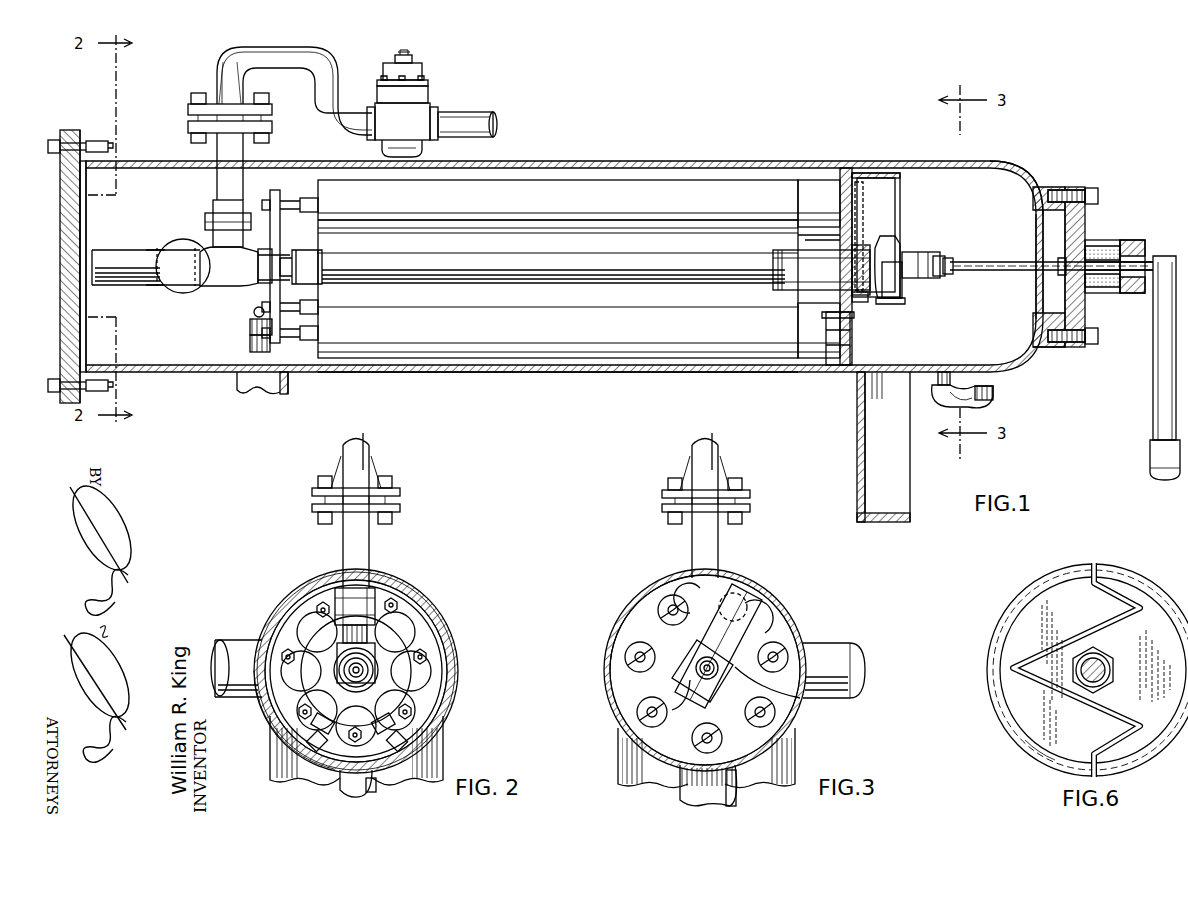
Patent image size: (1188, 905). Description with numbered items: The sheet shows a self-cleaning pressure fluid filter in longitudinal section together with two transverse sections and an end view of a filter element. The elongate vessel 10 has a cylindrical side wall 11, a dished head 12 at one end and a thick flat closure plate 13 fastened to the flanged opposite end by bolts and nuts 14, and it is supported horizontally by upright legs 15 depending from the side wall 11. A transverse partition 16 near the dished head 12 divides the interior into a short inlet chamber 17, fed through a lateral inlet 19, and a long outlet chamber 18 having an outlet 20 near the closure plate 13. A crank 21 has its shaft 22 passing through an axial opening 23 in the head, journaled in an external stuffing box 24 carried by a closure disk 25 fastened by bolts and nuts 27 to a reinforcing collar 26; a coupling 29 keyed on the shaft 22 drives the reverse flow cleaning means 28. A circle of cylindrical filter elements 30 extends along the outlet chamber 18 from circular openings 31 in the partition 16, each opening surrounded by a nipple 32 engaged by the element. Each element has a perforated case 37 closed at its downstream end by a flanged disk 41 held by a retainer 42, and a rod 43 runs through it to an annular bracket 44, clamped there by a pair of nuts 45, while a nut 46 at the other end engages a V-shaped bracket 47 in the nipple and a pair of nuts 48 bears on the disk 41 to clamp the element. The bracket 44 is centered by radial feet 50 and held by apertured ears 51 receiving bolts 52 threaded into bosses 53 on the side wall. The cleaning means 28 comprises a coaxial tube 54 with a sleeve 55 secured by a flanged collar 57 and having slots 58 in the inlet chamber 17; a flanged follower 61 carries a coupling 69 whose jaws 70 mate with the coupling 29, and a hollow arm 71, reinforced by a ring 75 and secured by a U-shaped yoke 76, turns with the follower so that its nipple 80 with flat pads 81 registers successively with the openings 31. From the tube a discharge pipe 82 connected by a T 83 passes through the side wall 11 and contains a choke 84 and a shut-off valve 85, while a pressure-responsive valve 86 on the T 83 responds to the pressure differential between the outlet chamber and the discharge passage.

In FIG. 1, the elongate vessel 10 is at (642, 161).
In FIG. 2, the elongate vessel 10 is at (303, 584).
In FIG. 3, the elongate vessel 10 is at (640, 592).
In FIG. 1, the cylindrical side wall 11 is at (604, 372).
In FIG. 2, the cylindrical side wall 11 is at (458, 652).
In FIG. 3, the cylindrical side wall 11 is at (800, 712).
In FIG. 1, the dished end wall or head 12 is at (1000, 168).
In FIG. 1, the flat closure plate or head 13 is at (73, 332).
In FIG. 1, the bolts and nuts 14 is at (108, 138).
In FIG. 1, the upright legs 15 is at (857, 428).
In FIG. 2, the upright legs 15 is at (270, 766).
In FIG. 3, the upright legs 15 is at (618, 760).
In FIG. 1, the upright wall or partition 16 is at (848, 358).
In FIG. 2, the upright wall or partition 16 is at (440, 688).
In FIG. 3, the upright wall or partition 16 is at (614, 684).
In FIG. 1, the inlet chamber 17 is at (964, 338).
In FIG. 1, the outlet chamber 18 is at (158, 353).
In FIG. 1, the lateral inlet 19 is at (994, 392).
In FIG. 2, the lateral inlet 19 is at (340, 790).
In FIG. 3, the lateral inlet 19 is at (736, 800).
In FIG. 1, the outlet 20 is at (182, 242).
In FIG. 2, the outlet 20 is at (222, 640).
In FIG. 3, the outlet 20 is at (862, 646).
In FIG. 1, the crank 21 is at (1154, 414).
In FIG. 1, the shaft 22 is at (1020, 262).
In FIG. 3, the shaft 22 is at (708, 700).
In FIG. 1, the axial opening 23 is at (1034, 300).
In FIG. 1, the external stuffing box 24 is at (1108, 240).
In FIG. 1, the flat closure disk or plate 25 is at (1086, 302).
In FIG. 1, the reinforcing collar or ring 26 is at (1050, 348).
In FIG. 1, the bolts and nuts 27 is at (1095, 190).
In FIG. 1, the reverse flow cleaning means 28 is at (937, 202).
In FIG. 1, the coupling 29 is at (951, 259).
In FIG. 3, the coupling 29 is at (694, 674).
In FIG. 1, the cylindrical filter elements 30 is at (495, 345).
In FIG. 6, the cylindrical filter elements 30 is at (1022, 586).
In FIG. 1, the circular openings 31 is at (851, 343).
In FIG. 1, the nipple 32 is at (820, 180).
In FIG. 6, the perforated metallic case or shell 37 is at (1004, 728).
In FIG. 6, the flanged metallic disk or closure plate 41 is at (1062, 756).
In FIG. 6, the retainer 42 is at (1084, 634).
In FIG. 1, the elongate rod 43 is at (286, 340).
In FIG. 2, the elongate rod 43 is at (396, 600).
In FIG. 3, the elongate rod 43 is at (625, 657).
In FIG. 6, the elongate rod 43 is at (1100, 680).
In FIG. 1, the annular supporting member or bracket 44 is at (284, 200).
In FIG. 2, the annular supporting member or bracket 44 is at (430, 625).
In FIG. 1, the pair of nuts 45 is at (283, 212).
In FIG. 2, the pair of nuts 45 is at (278, 640).
In FIG. 3, the nut 46 is at (790, 662).
In FIG. 3, the V-shaped bracket 47 is at (722, 738).
In FIG. 1, the pair of nuts 48 is at (319, 333).
In FIG. 6, the pair of nuts 48 is at (1112, 660).
In FIG. 2, the radial feet or lugs 50 is at (272, 745).
In FIG. 1, the apertured ears or lugs 51 is at (250, 327).
In FIG. 2, the apertured ears or lugs 51 is at (380, 719).
In FIG. 1, the bolts 52 is at (255, 311).
In FIG. 2, the bolts 52 is at (328, 719).
In FIG. 1, the bosses 53 is at (250, 345).
In FIG. 2, the bosses 53 is at (400, 760).
In FIG. 1, the cylindrical tube or pipe 54 is at (566, 286).
In FIG. 1, the short sleeve 55 is at (782, 288).
In FIG. 1, the flanged collar 57 is at (840, 240).
In FIG. 1, the elongate openings or slots 58 is at (862, 266).
In FIG. 1, the externally-flanged follower 61 is at (898, 252).
In FIG. 3, the externally-flanged follower 61 is at (738, 682).
In FIG. 1, the coupling 69 is at (922, 252).
In FIG. 1, the coacting jaws 70 is at (940, 278).
In FIG. 1, the transverse hollow member or arm 71 is at (890, 304).
In FIG. 3, the transverse hollow member or arm 71 is at (760, 588).
In FIG. 1, the ring 75 is at (862, 302).
In FIG. 1, the angular bracket or U-shaped yoke 76 is at (900, 286).
In FIG. 3, the angular bracket or U-shaped yoke 76 is at (694, 660).
In FIG. 1, the short nipple 80 is at (860, 196).
In FIG. 3, the flat pad 81 is at (775, 615).
In FIG. 1, the lateral discharge conductor or pipe 82 is at (236, 57).
In FIG. 1, the T 83 is at (214, 290).
In FIG. 1, the choke 84 is at (188, 118).
In FIG. 1, the shut-off valve 85 is at (432, 104).
In FIG. 1, the pressure-responsive valve 86 is at (138, 285).